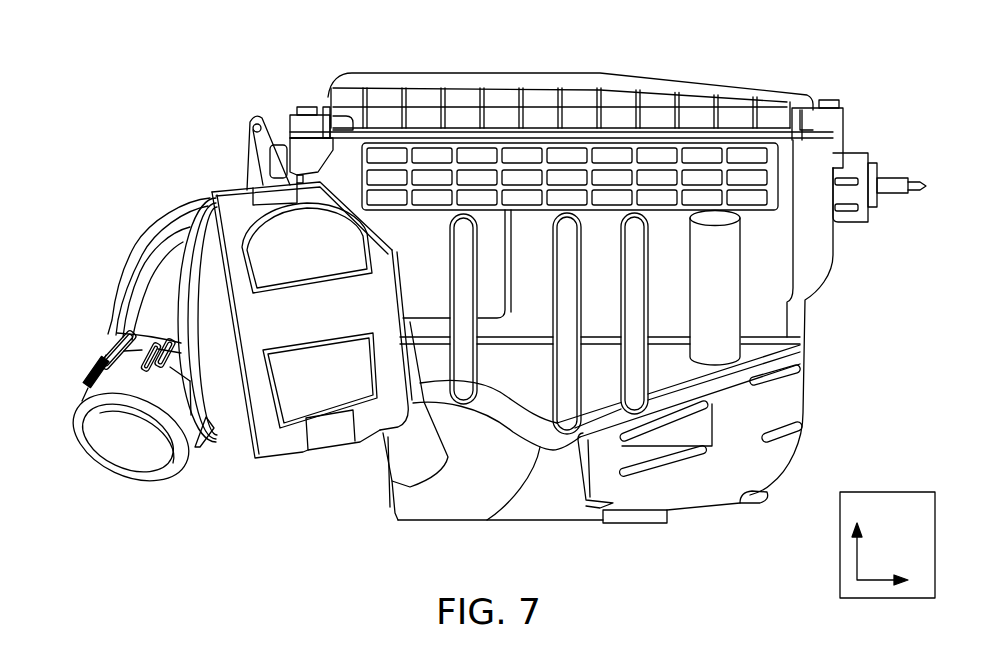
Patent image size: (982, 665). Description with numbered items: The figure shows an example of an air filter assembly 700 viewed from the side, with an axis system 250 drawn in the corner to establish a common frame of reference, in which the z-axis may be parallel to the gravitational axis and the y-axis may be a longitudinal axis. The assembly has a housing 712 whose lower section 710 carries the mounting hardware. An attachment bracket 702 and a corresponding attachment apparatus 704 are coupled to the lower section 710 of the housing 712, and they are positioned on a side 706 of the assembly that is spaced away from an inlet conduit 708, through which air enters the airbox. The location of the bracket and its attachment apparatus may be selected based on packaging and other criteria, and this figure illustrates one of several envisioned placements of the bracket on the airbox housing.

The air filter assembly 700 is at (190, 140).
The attachment bracket 702 is at (888, 224).
The attachment apparatus 704 is at (884, 180).
The side 706 is at (858, 290).
The inlet conduit 708 is at (90, 370).
The lower section 710 is at (612, 311).
The housing 712 is at (855, 63).
The axis system 250 is at (840, 553).